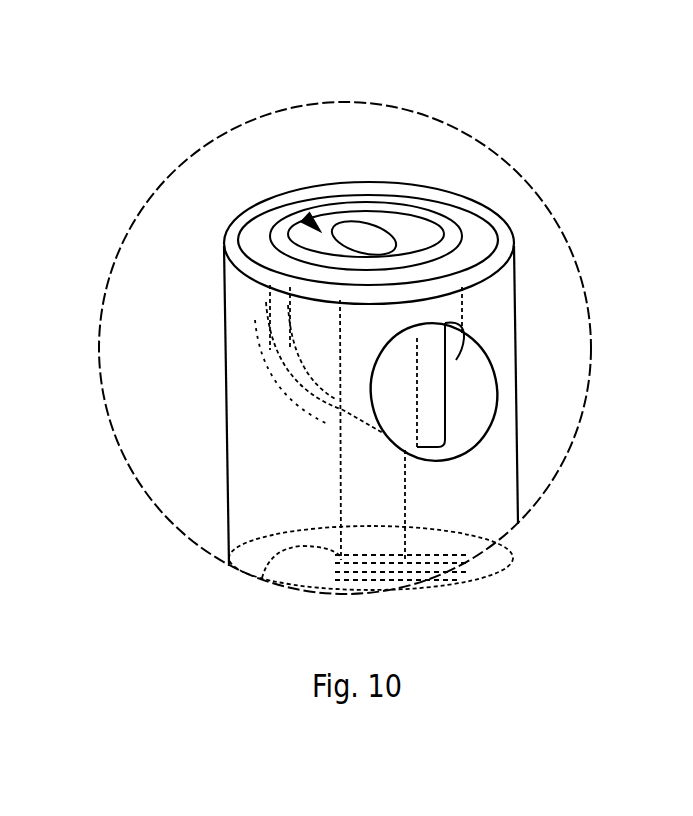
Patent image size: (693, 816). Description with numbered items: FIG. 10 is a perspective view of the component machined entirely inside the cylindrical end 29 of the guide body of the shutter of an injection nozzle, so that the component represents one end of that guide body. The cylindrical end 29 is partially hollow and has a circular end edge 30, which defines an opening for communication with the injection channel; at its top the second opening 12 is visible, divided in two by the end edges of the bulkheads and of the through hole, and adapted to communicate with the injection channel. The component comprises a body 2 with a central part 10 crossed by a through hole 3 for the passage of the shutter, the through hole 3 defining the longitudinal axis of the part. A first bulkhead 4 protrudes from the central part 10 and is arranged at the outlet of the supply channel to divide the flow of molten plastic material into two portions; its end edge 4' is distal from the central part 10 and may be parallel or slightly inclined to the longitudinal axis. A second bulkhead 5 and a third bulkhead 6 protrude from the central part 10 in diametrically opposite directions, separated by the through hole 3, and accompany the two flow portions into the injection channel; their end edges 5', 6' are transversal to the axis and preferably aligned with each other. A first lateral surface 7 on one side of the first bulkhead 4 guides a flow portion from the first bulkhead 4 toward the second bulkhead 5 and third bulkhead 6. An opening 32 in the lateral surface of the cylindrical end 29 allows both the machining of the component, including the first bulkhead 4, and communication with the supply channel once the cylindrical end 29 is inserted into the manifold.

The body 2 is at (308, 219).
The through hole 3 is at (374, 232).
The first bulkhead 4 is at (515, 387).
The end edge of the first bulkhead 4' is at (537, 385).
The second bulkhead 5 is at (405, 314).
The end edge of the second bulkhead 5' is at (348, 235).
The third bulkhead 6 is at (408, 278).
The end edge of the third bulkhead 6' is at (509, 358).
The first lateral surface 7 is at (392, 412).
The central part 10 is at (320, 250).
The second opening 12 is at (283, 227).
The cylindrical end 29 is at (245, 445).
The circular end edge 30 is at (478, 237).
The opening 32 is at (485, 423).